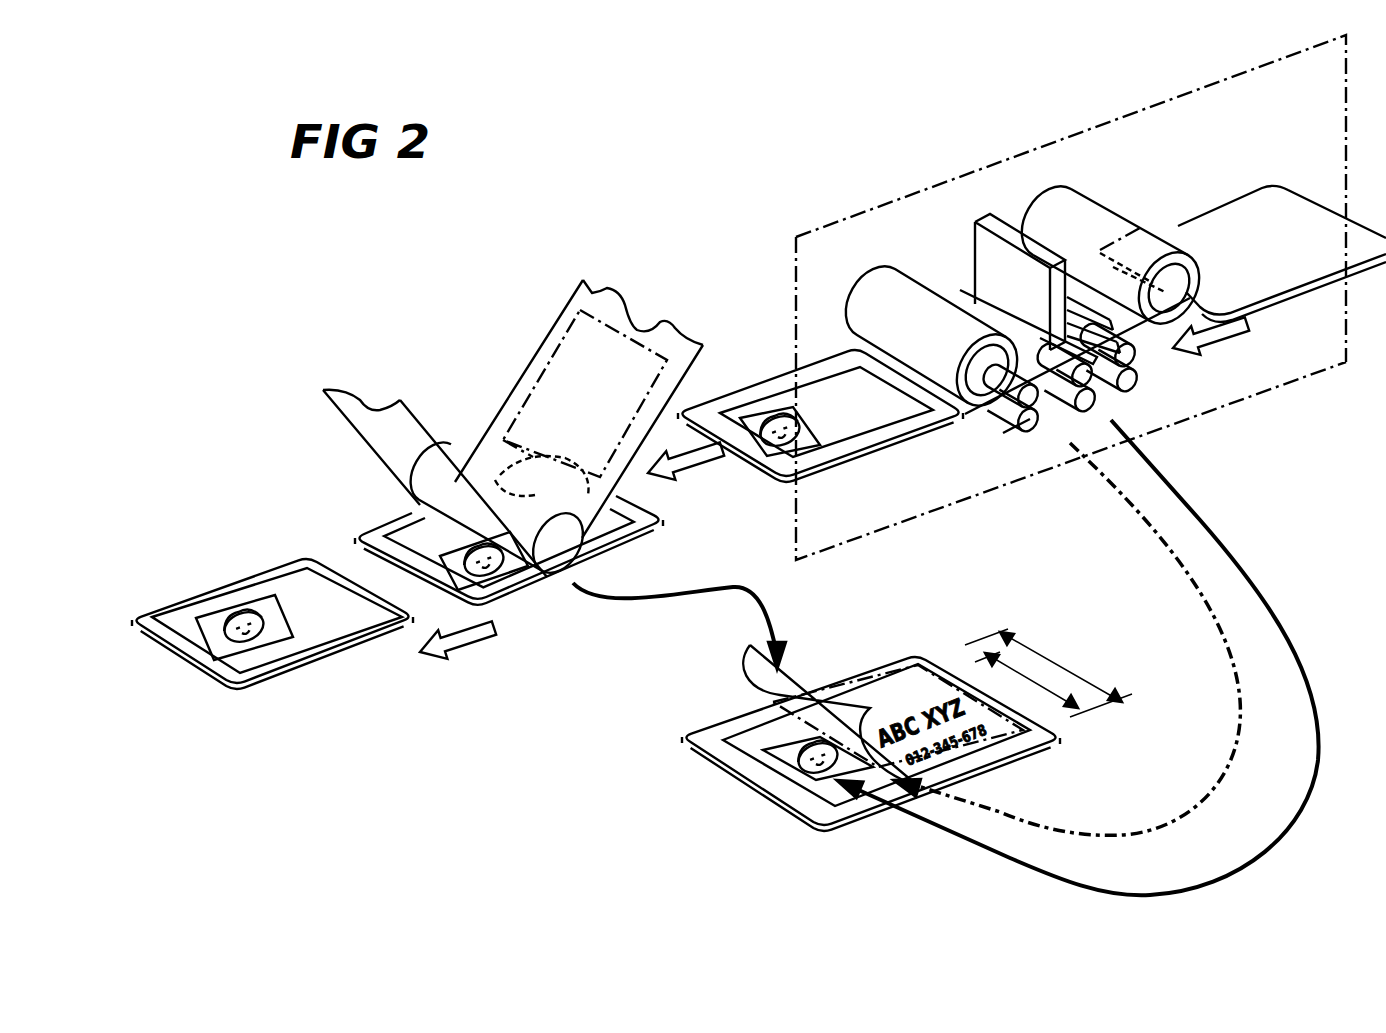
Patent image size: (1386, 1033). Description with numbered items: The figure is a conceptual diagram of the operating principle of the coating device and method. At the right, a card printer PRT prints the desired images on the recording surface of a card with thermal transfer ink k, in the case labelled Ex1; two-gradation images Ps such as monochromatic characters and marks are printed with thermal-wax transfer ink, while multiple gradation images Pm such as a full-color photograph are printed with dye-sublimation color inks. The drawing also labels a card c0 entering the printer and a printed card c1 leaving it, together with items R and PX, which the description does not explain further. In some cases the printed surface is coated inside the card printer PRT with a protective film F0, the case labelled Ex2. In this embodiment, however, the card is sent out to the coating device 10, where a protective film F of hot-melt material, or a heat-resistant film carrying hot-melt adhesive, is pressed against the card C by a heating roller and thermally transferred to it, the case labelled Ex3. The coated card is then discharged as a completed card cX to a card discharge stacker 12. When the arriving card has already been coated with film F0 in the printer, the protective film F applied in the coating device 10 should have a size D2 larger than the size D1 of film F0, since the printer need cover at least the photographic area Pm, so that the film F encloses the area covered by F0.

The card printer PRT is at (968, 172).
The thermal transfer ink k is at (1100, 232).
The blank card c0 is at (1229, 216).
The printed card c1 is at (805, 411).
The multiple gradation image Pm is at (817, 433).
The two-gradation image Ps is at (888, 423).
The protective film F is at (553, 340).
The film roll R is at (659, 326).
The coating device 10 is at (458, 440).
The card discharge stacker 12 is at (462, 440).
The completed card cX is at (253, 580).
The card C is at (532, 593).
The reference position PX is at (562, 590).
The coating example in the coating device Ex3 is at (679, 626).
The protective film F0 is at (747, 702).
The size of protective film F0 D1 is at (1026, 680).
The size of protective film F D2 is at (1048, 673).
The printer coating example Ex2 is at (1066, 639).
The printing example Ex1 is at (1098, 657).